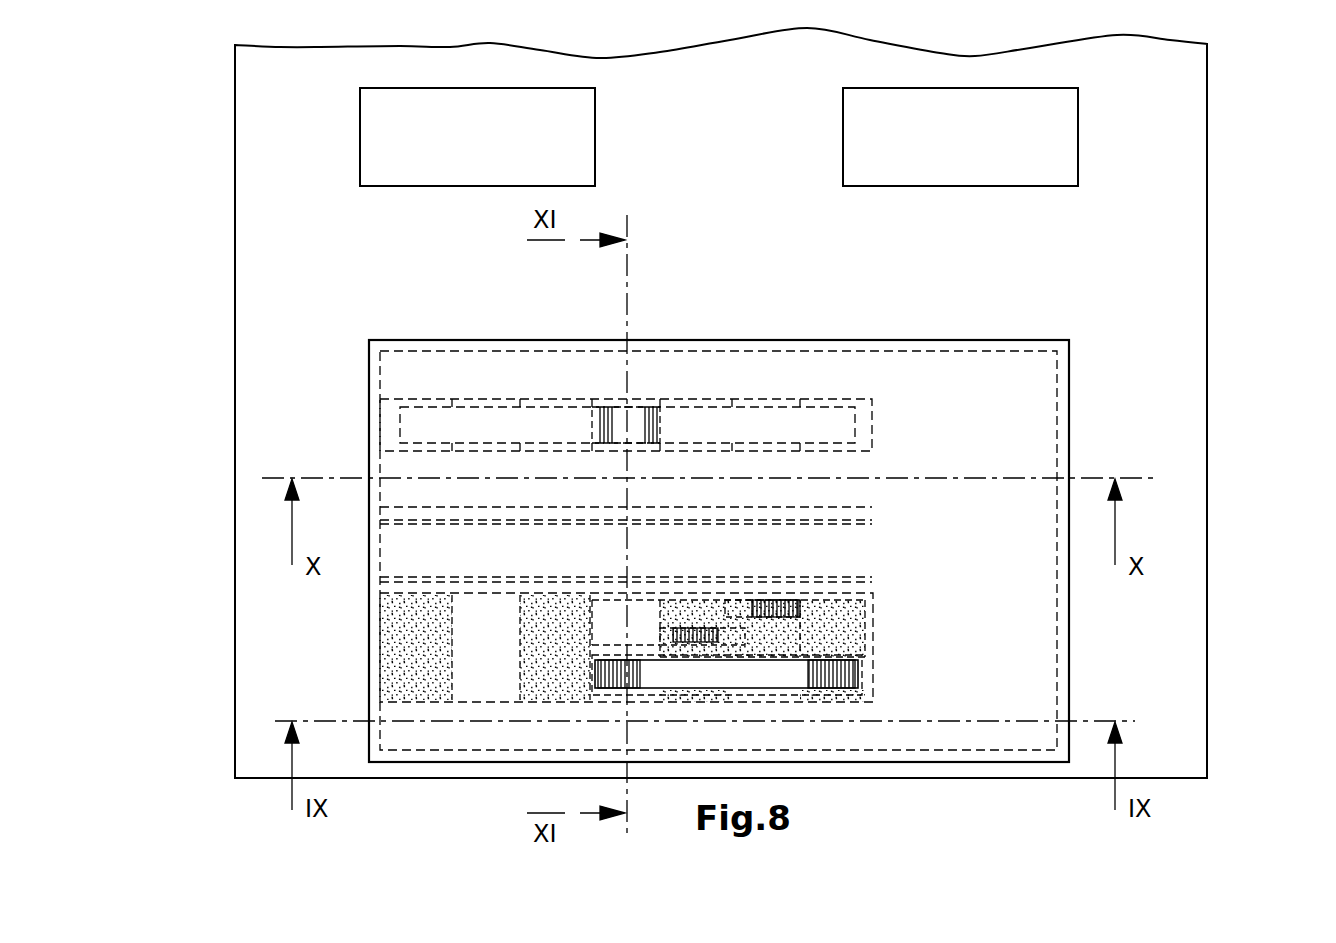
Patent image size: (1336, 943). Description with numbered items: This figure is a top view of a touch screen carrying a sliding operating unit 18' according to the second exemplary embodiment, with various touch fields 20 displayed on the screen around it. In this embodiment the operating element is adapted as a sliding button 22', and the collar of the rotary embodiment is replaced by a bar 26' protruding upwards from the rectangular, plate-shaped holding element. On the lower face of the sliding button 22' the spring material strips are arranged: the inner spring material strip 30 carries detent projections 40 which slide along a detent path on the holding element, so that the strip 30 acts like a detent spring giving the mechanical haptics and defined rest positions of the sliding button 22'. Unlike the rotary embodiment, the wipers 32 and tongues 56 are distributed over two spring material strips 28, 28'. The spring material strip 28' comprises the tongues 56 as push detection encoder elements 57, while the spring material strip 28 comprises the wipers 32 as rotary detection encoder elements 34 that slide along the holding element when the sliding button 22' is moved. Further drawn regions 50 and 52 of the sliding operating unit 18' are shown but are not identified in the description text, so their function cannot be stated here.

The touch fields 20 is at (290, 133).
The sliding operating unit 18' is at (851, 543).
The sliding button 22' is at (833, 550).
The inner spring material strip 30 is at (748, 425).
The detent projections 40 is at (620, 425).
The bar 26' is at (680, 542).
The spring material strip 28' is at (890, 635).
The outer spring material strip 28 is at (728, 712).
The push detection encoder elements 57 is at (698, 605).
The tongues 56 is at (672, 598).
The rotary detection encoder elements 34 is at (643, 712).
The wipers 32 is at (603, 692).
The stippled block 50 is at (410, 637).
The gap 52 is at (487, 665).